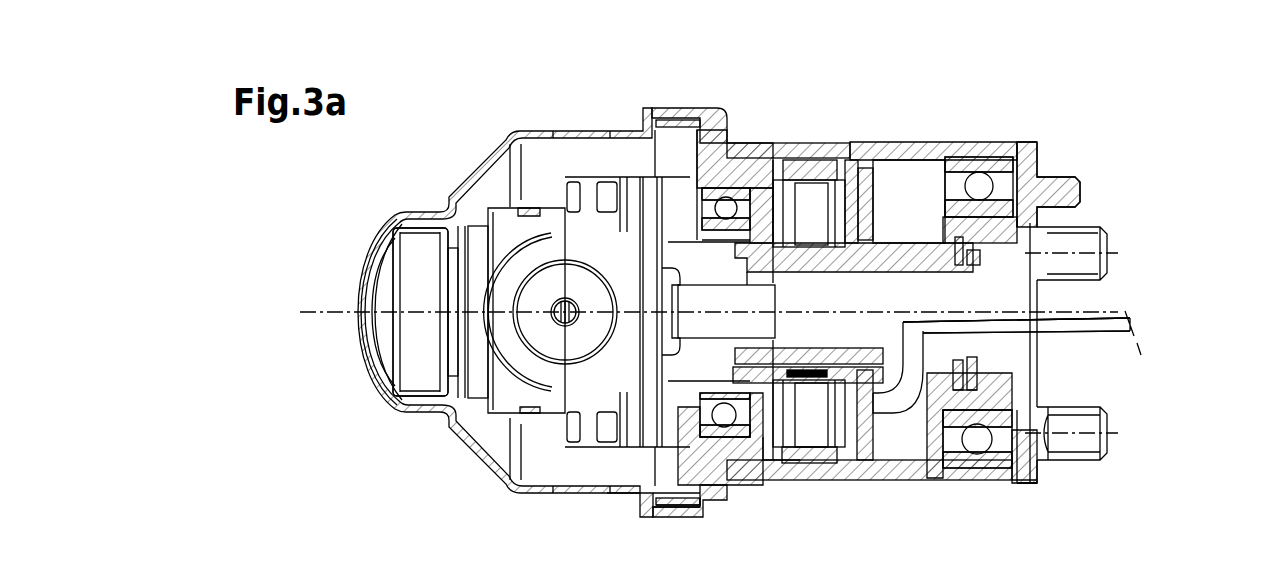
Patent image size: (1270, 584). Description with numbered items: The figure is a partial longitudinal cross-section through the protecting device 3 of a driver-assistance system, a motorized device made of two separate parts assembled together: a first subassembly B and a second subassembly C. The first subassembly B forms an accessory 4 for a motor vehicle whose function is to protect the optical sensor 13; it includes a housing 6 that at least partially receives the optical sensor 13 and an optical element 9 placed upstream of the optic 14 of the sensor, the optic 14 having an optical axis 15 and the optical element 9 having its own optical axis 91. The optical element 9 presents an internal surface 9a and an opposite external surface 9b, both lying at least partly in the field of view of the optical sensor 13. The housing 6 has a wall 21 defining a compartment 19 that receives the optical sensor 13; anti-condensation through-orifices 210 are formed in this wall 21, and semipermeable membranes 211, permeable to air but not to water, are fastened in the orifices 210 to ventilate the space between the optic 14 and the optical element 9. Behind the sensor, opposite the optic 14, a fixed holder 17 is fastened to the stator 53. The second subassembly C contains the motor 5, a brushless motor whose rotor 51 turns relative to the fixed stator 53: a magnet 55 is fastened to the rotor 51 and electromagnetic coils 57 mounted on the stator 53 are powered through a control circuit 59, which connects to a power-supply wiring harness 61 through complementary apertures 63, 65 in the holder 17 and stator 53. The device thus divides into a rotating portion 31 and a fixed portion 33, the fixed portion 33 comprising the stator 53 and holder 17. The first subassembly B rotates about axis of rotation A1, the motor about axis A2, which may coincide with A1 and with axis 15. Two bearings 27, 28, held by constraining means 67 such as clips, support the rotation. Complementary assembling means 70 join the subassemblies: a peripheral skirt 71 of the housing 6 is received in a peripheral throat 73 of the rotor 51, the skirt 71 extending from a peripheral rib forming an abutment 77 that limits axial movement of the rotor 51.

The protecting device 3 is at (218, 232).
The accessory 4 is at (498, 110).
The motor 5 is at (1063, 114).
The housing 6 is at (632, 130).
The optical element 9 is at (350, 345).
The internal surface 9a is at (386, 340).
The external surface 9b is at (371, 262).
The optical sensor 13 is at (485, 195).
The optic 14 is at (378, 260).
The optical axis 15 is at (342, 297).
The optical axis 91 is at (420, 312).
The holder 17 is at (865, 352).
The compartment 19 is at (541, 443).
The wall 21 is at (620, 500).
The bearing 27 is at (737, 160).
The bearing 28 is at (990, 160).
The movable portion 31 is at (761, 117).
The fixed portion 33 is at (1122, 462).
The rotor 51 is at (875, 163).
The stator 53 is at (905, 245).
The magnet 55 is at (813, 458).
The electromagnetic coils 57 is at (805, 190).
The control circuit 59 is at (867, 462).
The power-supply wiring harness 61 is at (1115, 316).
The aperture 63 is at (925, 434).
The aperture 65 is at (910, 325).
The constraining means 67 is at (985, 374).
The complementary assembling means 70 is at (699, 90).
The peripheral skirt 71 is at (702, 507).
The peripheral throat 73 is at (666, 525).
The abutment 77 is at (652, 102).
The through-orifice 210 is at (555, 130).
The semipermeable membrane 211 is at (607, 130).
The axis of rotation A1 is at (1018, 357).
The axis of rotation A2 is at (1016, 320).
The first subassembly B is at (272, 330).
The second subassembly C is at (962, 85).